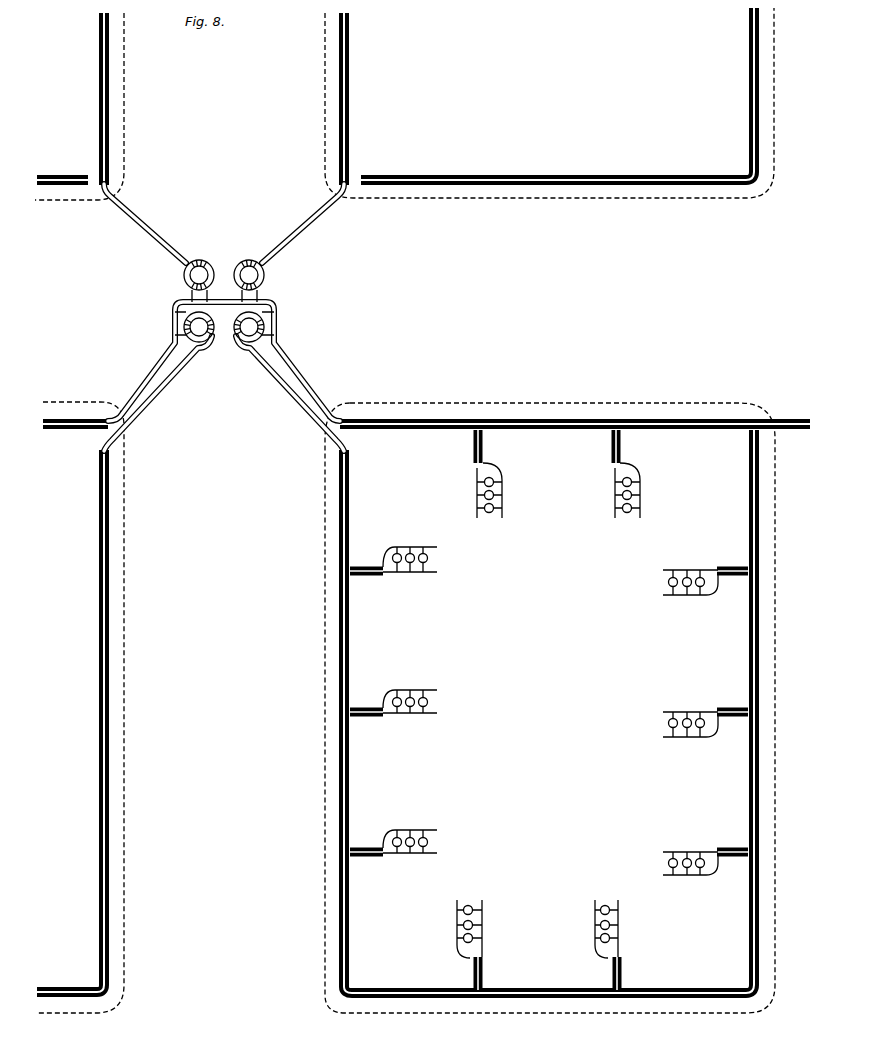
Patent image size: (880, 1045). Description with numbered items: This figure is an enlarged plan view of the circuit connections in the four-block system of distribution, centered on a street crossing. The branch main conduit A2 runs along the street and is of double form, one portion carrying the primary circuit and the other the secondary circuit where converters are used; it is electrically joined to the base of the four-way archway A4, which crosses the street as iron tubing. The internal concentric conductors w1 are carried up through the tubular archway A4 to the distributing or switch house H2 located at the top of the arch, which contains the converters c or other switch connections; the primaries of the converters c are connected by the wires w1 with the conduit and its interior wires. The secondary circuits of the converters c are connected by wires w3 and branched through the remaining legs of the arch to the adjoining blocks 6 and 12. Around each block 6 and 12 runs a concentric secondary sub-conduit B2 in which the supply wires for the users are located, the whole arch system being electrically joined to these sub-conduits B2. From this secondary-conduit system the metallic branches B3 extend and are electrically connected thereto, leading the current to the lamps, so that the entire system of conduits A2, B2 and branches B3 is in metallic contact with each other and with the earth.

The block 12 is at (402, 104).
The block 6 is at (406, 707).
The branch main conduit A2 is at (66, 417).
The archway A4 is at (196, 310).
The secondary sub-conduit B2 is at (100, 153).
The branch B3 is at (349, 779).
The switch-house H2 is at (224, 265).
The converter c is at (183, 275).
The secondary wire w3 is at (160, 236).
The primary wire w1 is at (138, 392).